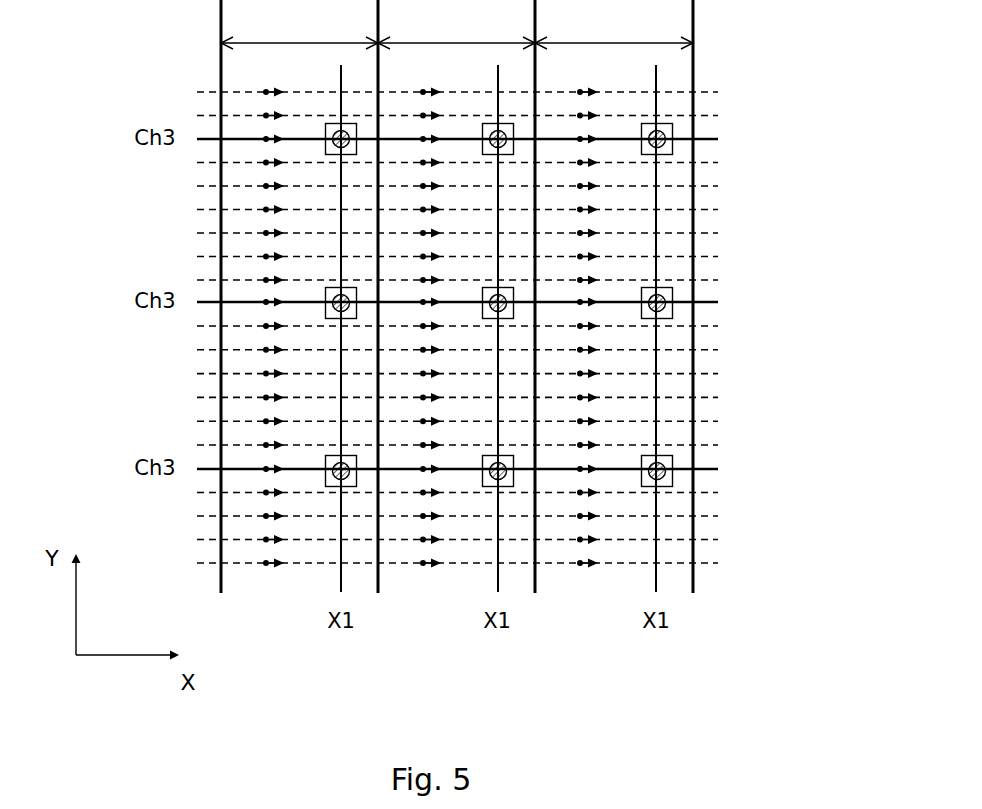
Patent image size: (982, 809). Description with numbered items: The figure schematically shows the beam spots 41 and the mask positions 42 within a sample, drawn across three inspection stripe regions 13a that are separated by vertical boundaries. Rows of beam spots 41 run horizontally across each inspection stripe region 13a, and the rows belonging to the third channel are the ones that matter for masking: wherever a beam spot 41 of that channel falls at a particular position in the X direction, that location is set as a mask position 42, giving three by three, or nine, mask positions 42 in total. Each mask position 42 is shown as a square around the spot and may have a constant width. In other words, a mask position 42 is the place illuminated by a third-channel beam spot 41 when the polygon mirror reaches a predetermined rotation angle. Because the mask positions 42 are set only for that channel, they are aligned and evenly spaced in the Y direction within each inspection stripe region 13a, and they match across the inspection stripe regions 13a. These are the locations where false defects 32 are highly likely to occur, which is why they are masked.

The inspection stripe region 13a is at (457, 32).
The beam spot 41 is at (263, 92).
The mask position 42 is at (672, 130).
The false defect 32 is at (666, 294).